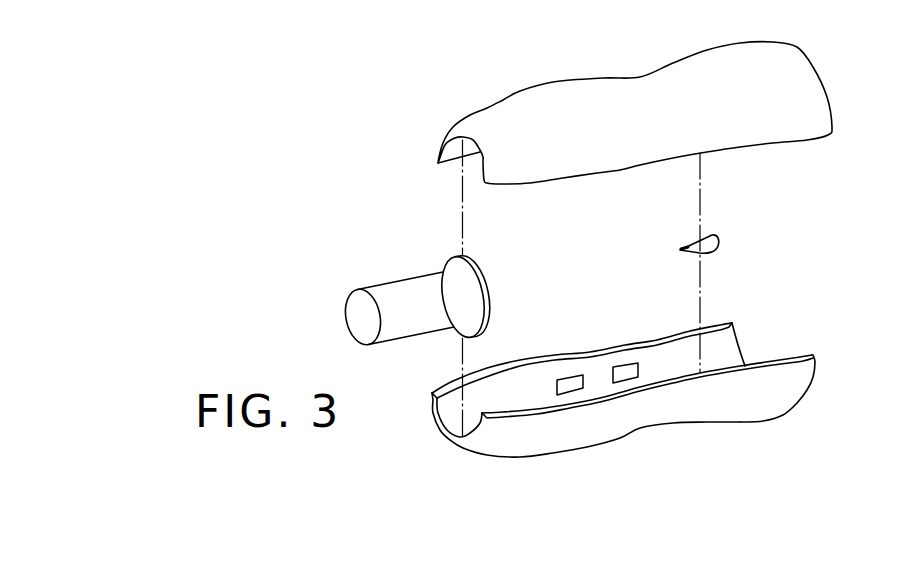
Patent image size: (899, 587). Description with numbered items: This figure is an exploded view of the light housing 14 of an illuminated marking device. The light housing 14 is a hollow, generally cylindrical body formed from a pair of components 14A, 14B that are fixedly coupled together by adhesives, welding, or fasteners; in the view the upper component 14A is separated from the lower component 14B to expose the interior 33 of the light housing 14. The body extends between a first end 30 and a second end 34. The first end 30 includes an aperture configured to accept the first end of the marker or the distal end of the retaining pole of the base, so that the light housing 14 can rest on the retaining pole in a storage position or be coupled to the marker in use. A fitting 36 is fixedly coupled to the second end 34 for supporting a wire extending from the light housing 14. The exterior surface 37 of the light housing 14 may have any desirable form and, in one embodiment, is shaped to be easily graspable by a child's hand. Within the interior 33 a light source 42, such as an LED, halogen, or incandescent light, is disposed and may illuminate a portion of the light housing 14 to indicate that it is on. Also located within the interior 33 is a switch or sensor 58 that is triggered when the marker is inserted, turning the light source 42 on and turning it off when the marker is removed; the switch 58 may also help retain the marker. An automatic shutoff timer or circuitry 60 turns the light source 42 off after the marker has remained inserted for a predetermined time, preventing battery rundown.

The light housing 14 is at (609, 42).
The light housing component 14A is at (803, 50).
The light housing component 14B is at (787, 412).
The first end 30 is at (817, 365).
The interior 33 is at (722, 354).
The second end 34 is at (448, 437).
The fitting 36 is at (382, 288).
The exterior surface 37 is at (535, 124).
The light source 42 is at (709, 237).
The switch or sensor 58 is at (570, 379).
The automatic shutoff timer or circuitry 60 is at (625, 370).